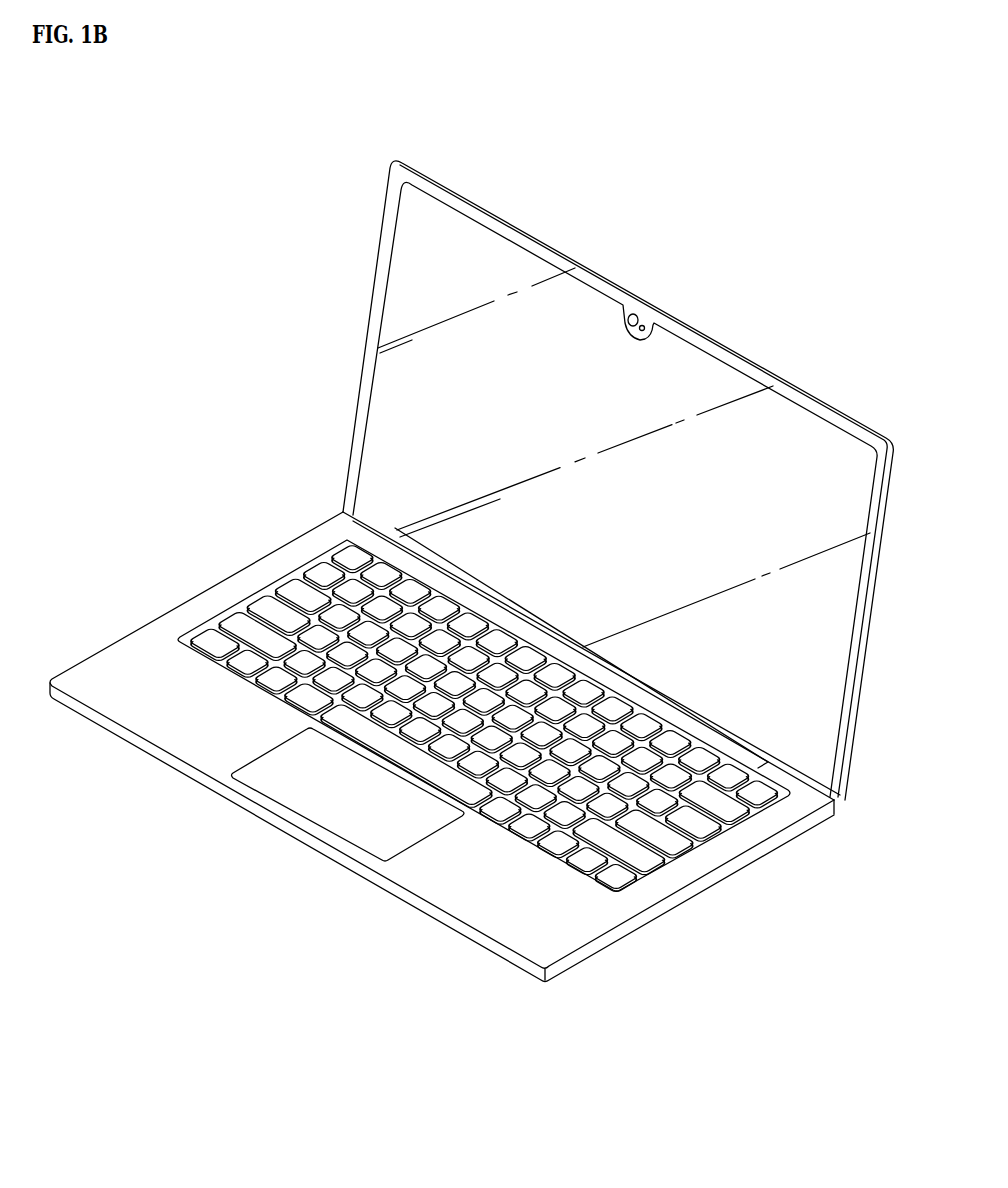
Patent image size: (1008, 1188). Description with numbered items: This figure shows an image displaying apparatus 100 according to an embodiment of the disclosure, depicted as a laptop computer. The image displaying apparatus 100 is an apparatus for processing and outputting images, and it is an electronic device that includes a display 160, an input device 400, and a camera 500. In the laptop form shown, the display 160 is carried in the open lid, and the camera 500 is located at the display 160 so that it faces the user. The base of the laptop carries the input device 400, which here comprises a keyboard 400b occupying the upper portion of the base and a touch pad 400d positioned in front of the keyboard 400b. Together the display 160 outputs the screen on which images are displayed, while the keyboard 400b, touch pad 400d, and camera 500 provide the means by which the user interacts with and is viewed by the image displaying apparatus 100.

The image displaying apparatus 100 is at (167, 189).
The display 160 is at (812, 437).
The camera 500 is at (633, 314).
The input device 400 is at (470, 1018).
The keyboard 400b is at (562, 840).
The touch pad 400d is at (401, 822).